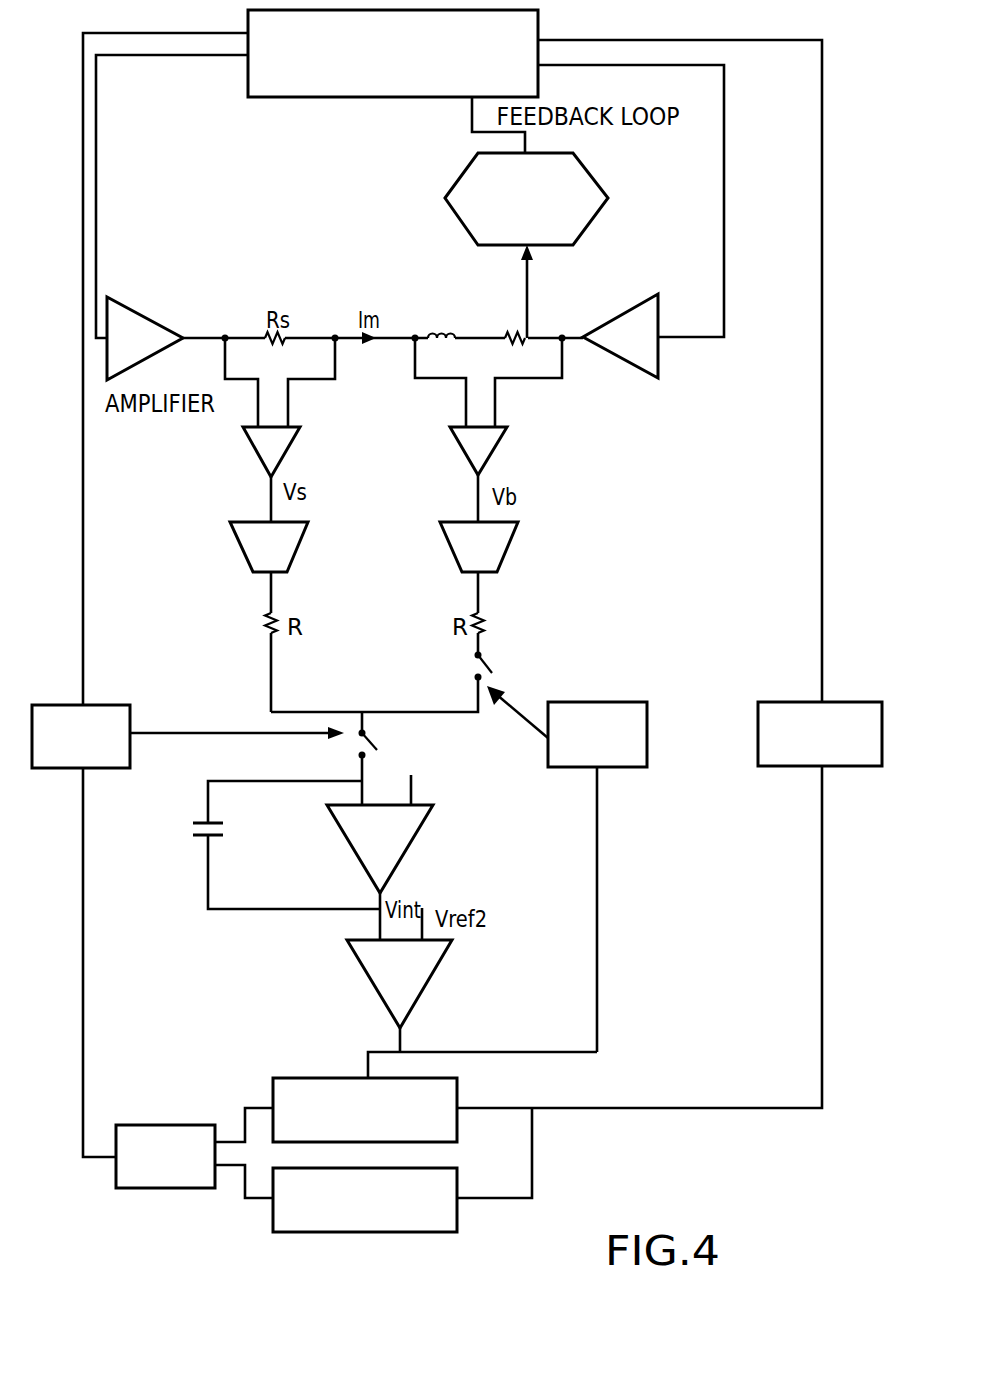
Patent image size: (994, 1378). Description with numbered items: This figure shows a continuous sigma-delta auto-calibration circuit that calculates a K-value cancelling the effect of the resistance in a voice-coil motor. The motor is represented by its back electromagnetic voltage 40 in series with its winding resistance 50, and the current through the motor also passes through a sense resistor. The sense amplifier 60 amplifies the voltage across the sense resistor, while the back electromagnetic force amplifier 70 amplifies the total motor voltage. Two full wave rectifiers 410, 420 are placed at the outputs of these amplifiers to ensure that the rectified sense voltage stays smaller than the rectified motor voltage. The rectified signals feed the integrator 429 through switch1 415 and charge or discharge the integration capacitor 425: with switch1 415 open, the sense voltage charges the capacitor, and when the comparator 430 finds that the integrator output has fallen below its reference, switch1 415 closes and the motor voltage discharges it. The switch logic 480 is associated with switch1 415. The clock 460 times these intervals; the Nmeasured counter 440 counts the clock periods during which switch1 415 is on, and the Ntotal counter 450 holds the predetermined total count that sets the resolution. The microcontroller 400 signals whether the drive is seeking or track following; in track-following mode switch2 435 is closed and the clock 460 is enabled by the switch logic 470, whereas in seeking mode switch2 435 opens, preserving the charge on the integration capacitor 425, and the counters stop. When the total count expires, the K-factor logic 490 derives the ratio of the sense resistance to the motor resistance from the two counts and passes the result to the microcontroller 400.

The microcontroller 400 is at (303, 91).
The back electromagnetic voltage 40 is at (440, 305).
The winding resistance 50 is at (540, 320).
The sense amplifier 60 is at (272, 443).
The back electromagnetic force amplifier 70 is at (473, 455).
The full wave rectifier 410 is at (292, 540).
The full wave rectifier 420 is at (462, 530).
The switch1 415 is at (470, 660).
The switch2 435 is at (352, 745).
The switch logic 470 is at (110, 770).
The capacitor Cint 425 is at (197, 842).
The integrator 429 is at (418, 826).
The comparator 430 is at (375, 978).
The Nmeasured counter 440 is at (285, 1085).
The Ntotal counter 450 is at (432, 1222).
The clock 460 is at (167, 1180).
The switch logic 480 is at (620, 768).
The K-factor logic 490 is at (787, 768).